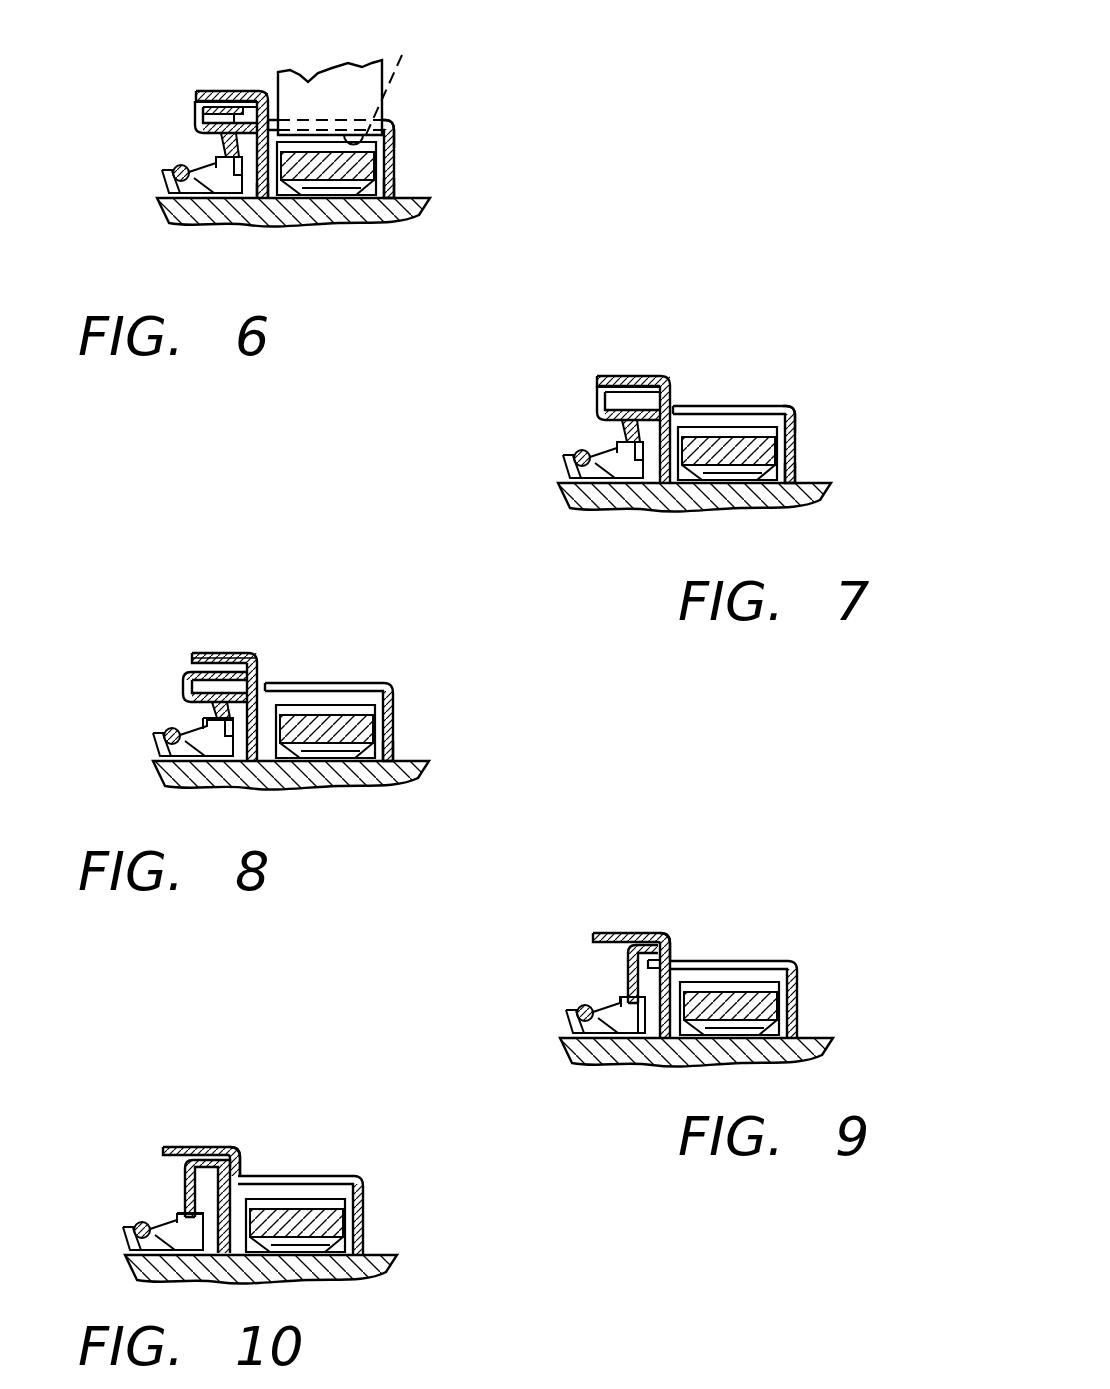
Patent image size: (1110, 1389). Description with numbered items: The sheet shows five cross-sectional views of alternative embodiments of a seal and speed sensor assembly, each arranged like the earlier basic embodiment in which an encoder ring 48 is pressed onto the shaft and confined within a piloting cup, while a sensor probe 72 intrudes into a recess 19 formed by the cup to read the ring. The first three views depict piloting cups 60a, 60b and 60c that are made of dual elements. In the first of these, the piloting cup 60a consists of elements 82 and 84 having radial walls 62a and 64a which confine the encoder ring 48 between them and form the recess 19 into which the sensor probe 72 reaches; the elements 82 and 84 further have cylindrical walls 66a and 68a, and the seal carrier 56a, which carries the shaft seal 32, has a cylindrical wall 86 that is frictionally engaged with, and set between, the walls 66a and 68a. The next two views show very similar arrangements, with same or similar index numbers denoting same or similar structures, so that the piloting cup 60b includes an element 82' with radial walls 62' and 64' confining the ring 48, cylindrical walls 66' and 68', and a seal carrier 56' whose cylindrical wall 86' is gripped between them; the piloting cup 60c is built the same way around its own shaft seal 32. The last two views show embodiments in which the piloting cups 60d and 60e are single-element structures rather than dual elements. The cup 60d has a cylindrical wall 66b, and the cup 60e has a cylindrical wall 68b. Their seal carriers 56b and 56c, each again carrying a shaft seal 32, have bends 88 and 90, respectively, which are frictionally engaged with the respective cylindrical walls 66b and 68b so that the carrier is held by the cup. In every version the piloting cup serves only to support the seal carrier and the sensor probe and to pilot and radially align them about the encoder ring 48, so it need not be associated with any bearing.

In FIG. 6, the recess 19 is at (363, 86).
In FIG. 7, the recess 19 is at (728, 378).
In FIG. 8, the recess 19 is at (323, 654).
In FIG. 9, the recess 19 is at (727, 962).
In FIG. 10, the recess 19 is at (294, 1178).
In FIG. 6, the shaft seal 32 is at (245, 195).
In FIG. 7, the shaft seal 32 is at (649, 480).
In FIG. 8, the shaft seal 32 is at (239, 756).
In FIG. 9, the shaft seal 32 is at (649, 1035).
In FIG. 10, the shaft seal 32 is at (213, 1252).
In FIG. 6, the encoder ring 48 is at (375, 177).
In FIG. 6, the seal carrier 56a is at (173, 129).
In FIG. 7, the seal carrier 56' is at (578, 412).
In FIG. 9, the seal carrier 56b is at (595, 989).
In FIG. 10, the seal carrier 56c is at (157, 1206).
In FIG. 6, the piloting cup 60a is at (378, 149).
In FIG. 7, the piloting cup 60b is at (781, 434).
In FIG. 8, the piloting cup 60c is at (371, 711).
In FIG. 9, the piloting cup 60d is at (786, 995).
In FIG. 10, the piloting cup 60e is at (352, 1211).
In FIG. 6, the radial wall 62a is at (326, 207).
In FIG. 7, the radial wall 62' is at (727, 492).
In FIG. 6, the radial wall 64a is at (428, 223).
In FIG. 7, the radial wall 64' is at (826, 510).
In FIG. 6, the cylindrical wall 66a is at (243, 64).
In FIG. 7, the cylindrical wall 66' is at (641, 349).
In FIG. 9, the cylindrical wall 66b is at (586, 965).
In FIG. 6, the cylindrical wall 68a is at (180, 132).
In FIG. 7, the cylindrical wall 68' is at (586, 426).
In FIG. 10, the cylindrical wall 68b is at (156, 1140).
In FIG. 6, the sensor probe 72 is at (338, 72).
In FIG. 6, the element 82 is at (420, 109).
In FIG. 7, the element 82' is at (824, 389).
In FIG. 6, the element 84 is at (227, 234).
In FIG. 6, the cylindrical wall 86 is at (207, 67).
In FIG. 7, the cylindrical wall 86' is at (610, 352).
In FIG. 9, the bend 88 is at (627, 919).
In FIG. 10, the bend 90 is at (194, 1130).